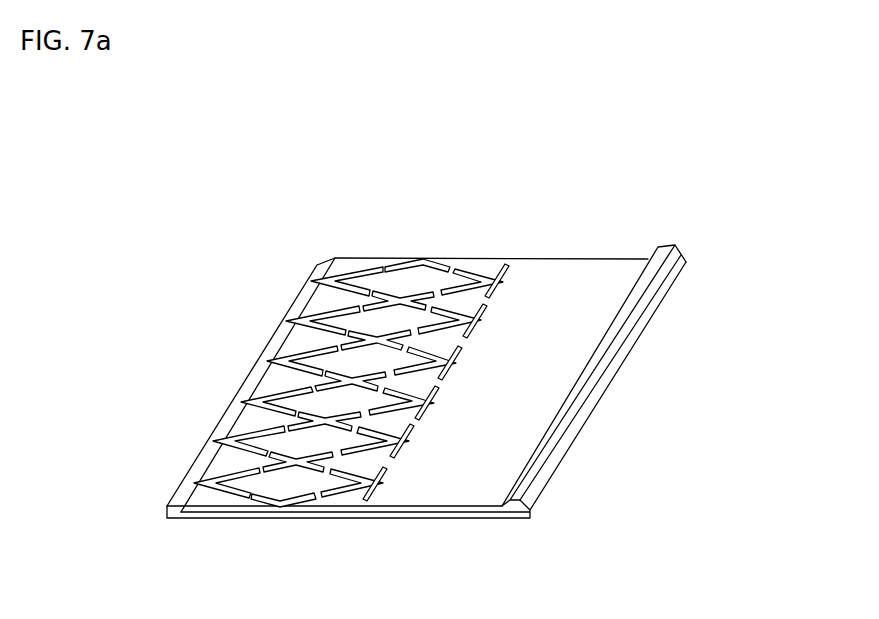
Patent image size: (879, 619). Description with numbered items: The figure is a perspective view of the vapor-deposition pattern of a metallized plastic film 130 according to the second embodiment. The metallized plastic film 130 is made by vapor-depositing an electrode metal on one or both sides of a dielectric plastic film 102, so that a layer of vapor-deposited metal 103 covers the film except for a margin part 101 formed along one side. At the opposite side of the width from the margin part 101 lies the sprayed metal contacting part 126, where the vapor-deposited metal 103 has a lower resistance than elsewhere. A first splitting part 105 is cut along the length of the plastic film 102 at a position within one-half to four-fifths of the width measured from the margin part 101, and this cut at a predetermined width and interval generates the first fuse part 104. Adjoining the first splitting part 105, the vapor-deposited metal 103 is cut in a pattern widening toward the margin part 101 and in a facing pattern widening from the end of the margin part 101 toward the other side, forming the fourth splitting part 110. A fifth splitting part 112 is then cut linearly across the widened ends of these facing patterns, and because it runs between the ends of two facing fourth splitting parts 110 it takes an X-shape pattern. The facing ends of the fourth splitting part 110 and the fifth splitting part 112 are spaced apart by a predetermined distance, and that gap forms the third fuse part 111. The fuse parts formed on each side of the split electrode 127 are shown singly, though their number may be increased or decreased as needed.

The metallized plastic film 130 is at (511, 176).
The margin part 101 is at (232, 410).
The plastic film 102 is at (610, 383).
The vapor-deposited metal 103 is at (490, 263).
The sprayed metal contacting part 126 is at (638, 298).
The split electrode 127 is at (457, 300).
The third fuse part 111 is at (282, 458).
The fourth splitting part 110 is at (325, 492).
The fifth splitting part 112 is at (322, 428).
The first fuse part 104 is at (390, 463).
The first splitting part 105 is at (373, 480).